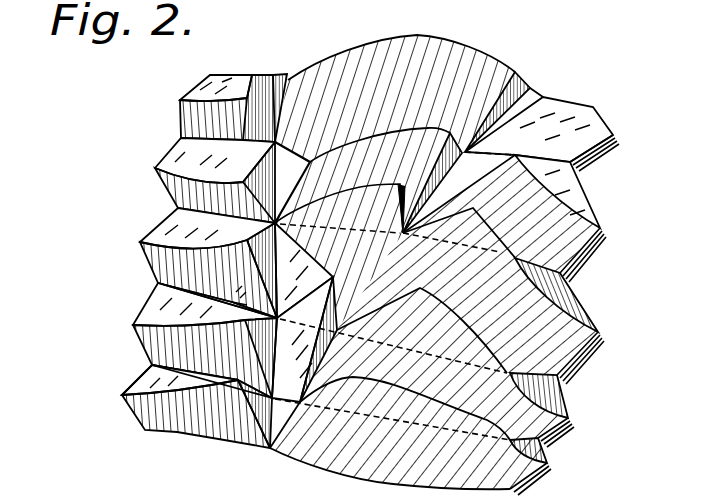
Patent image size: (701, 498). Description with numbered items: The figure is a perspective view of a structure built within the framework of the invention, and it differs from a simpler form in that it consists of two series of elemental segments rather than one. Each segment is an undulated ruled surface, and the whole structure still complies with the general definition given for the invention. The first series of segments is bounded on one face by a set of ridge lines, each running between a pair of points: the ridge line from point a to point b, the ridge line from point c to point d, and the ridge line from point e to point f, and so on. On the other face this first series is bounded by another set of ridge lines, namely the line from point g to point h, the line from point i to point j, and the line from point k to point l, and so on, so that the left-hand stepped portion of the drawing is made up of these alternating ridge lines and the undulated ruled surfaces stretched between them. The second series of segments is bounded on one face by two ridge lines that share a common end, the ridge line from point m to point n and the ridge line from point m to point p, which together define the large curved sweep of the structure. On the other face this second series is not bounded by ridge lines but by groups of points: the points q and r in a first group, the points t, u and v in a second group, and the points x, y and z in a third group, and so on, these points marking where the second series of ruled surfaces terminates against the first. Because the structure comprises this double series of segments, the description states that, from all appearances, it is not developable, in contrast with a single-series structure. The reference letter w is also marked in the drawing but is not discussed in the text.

The ridge line end point n is at (235, 97).
The ridge line end point p is at (539, 117).
The ridge line end point k is at (215, 180).
The ridge line end point e is at (198, 263).
The ridge line end point g is at (198, 300).
The upper cam surface w is at (394, 182).
The bounding point v is at (381, 267).
The bounding point u is at (304, 270).
The ridge line end point i is at (206, 294).
The bounding point r is at (237, 292).
The ridge line end point c is at (194, 340).
The bounding point y is at (434, 355).
The bounding point z is at (468, 265).
The ridge line end point f is at (563, 321).
The ridge line end point j is at (543, 393).
The ridge line end point l is at (567, 210).
The ridge line end point d is at (562, 430).
The ridge line end point h is at (535, 447).
The ridge line end point b is at (537, 476).
The ridge line end point a is at (186, 406).
The bounding point q is at (246, 414).
The bounding point t is at (302, 339).
The bounding point x is at (408, 423).
The ridge line end point m is at (384, 445).